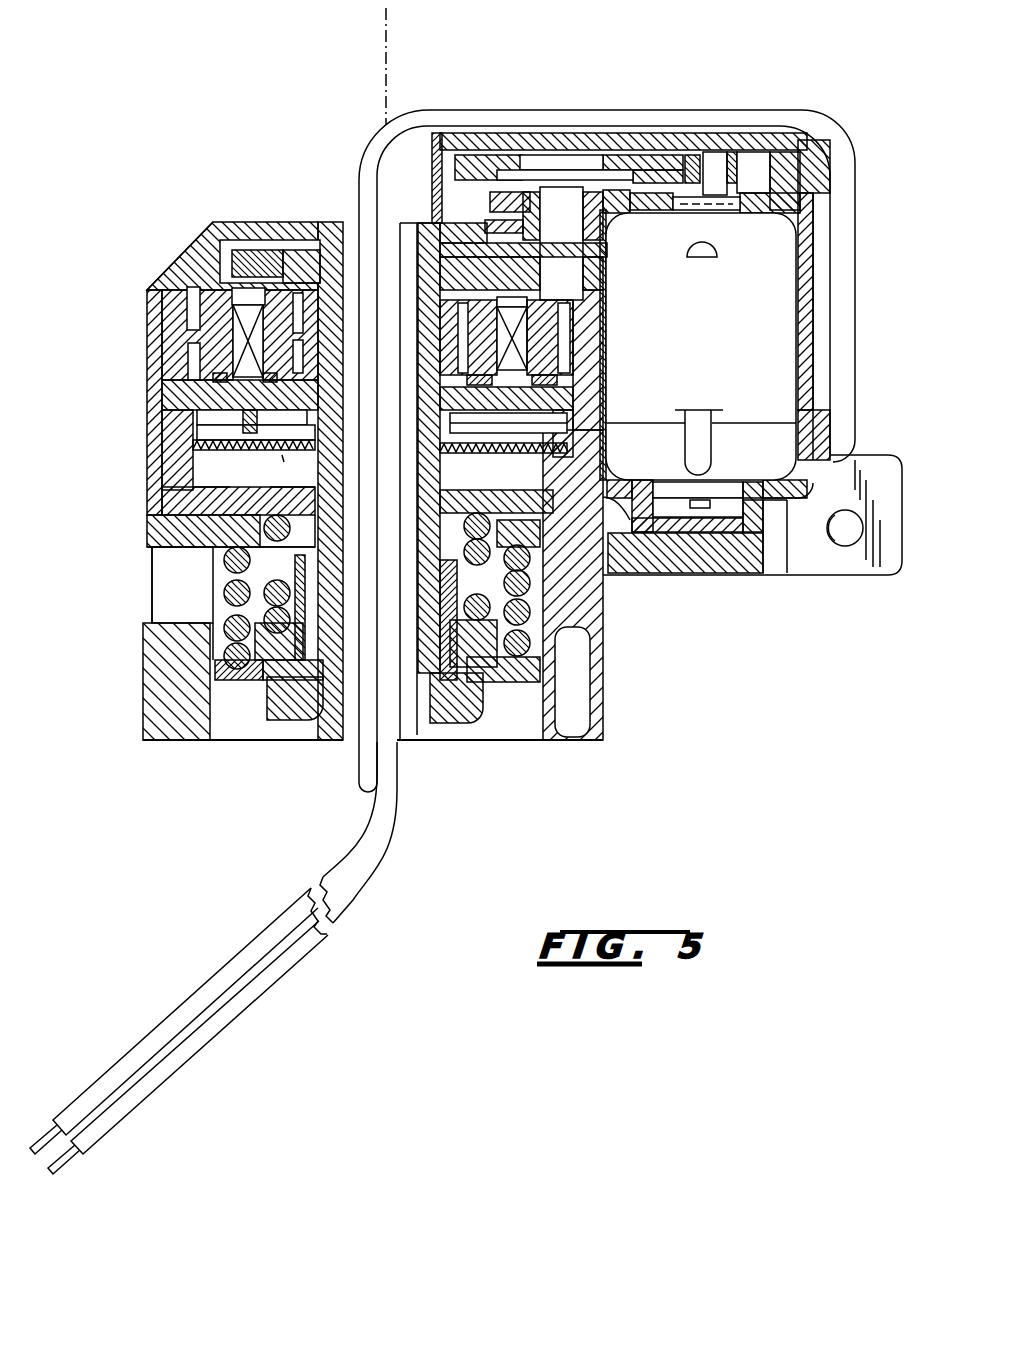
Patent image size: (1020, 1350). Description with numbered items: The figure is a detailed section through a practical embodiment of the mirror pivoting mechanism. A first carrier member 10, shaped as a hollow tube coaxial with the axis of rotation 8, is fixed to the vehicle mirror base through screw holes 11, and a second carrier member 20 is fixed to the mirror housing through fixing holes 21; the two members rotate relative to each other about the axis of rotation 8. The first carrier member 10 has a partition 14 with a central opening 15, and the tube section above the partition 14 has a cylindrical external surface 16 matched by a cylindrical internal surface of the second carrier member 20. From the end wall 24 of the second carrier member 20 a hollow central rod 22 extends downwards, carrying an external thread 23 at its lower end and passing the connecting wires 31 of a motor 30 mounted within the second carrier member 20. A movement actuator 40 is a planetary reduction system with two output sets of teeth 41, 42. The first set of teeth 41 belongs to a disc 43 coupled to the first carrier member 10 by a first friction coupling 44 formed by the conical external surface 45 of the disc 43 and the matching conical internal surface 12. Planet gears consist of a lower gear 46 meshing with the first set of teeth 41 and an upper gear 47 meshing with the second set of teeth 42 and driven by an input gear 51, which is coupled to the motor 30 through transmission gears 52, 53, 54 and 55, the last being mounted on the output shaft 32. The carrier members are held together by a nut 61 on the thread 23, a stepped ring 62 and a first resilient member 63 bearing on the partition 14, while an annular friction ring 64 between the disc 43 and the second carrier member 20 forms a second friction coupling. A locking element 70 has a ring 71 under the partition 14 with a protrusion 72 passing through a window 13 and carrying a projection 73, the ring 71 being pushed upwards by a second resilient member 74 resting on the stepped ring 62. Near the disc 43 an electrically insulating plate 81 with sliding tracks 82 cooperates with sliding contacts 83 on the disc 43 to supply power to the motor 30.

The axis of rotation 8 is at (390, 19).
The first carrier member 10 is at (615, 464).
The screw holes 11 is at (578, 748).
The conical internal surface 12 is at (178, 428).
The window 13 is at (145, 612).
The partition 14 is at (162, 523).
The central opening 15 is at (265, 466).
The cylindrical external surface 16 is at (165, 455).
The second carrier member 20 is at (717, 578).
The fixing holes 21 is at (846, 545).
The central rod 22 is at (417, 738).
The external thread 23 is at (437, 742).
The end wall 24 is at (245, 222).
The motor 30 is at (722, 360).
The connecting wires 31 is at (183, 997).
The output shaft 32 is at (757, 212).
The movement actuator 40 is at (193, 452).
The first set of teeth 41 is at (165, 362).
The second set of teeth 42 is at (147, 278).
The disc 43 is at (162, 392).
The first friction coupling 44 is at (175, 459).
The conical external surface 45 is at (168, 415).
The lower gear 46 is at (165, 348).
The upper gear 47 is at (200, 265).
The input gear 51 is at (310, 240).
The transmission gear 52 is at (290, 240).
The transmission gear 53 is at (583, 258).
The transmission gear 54 is at (657, 160).
The transmission gear 55 is at (718, 160).
The nut 61 is at (292, 724).
The stepped ring 62 is at (222, 682).
The first resilient member 63 is at (255, 682).
The annular friction ring 64 is at (165, 320).
The locking element 70 is at (128, 591).
The ring 71 is at (503, 495).
The protrusion 72 is at (170, 572).
The projection 73 is at (170, 550).
The second resilient member 74 is at (245, 565).
The electrically insulating plate 81 is at (165, 487).
The sliding tracks 82 is at (302, 486).
The sliding contacts 83 is at (190, 490).